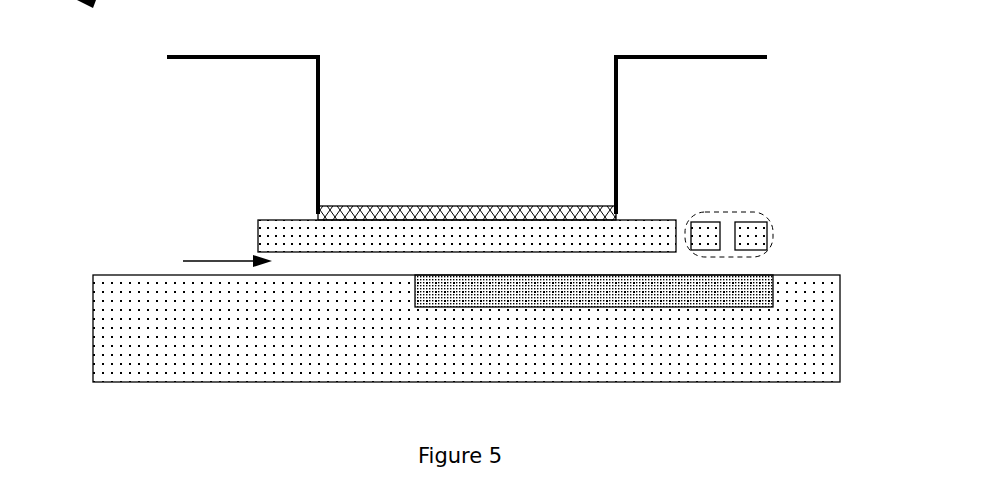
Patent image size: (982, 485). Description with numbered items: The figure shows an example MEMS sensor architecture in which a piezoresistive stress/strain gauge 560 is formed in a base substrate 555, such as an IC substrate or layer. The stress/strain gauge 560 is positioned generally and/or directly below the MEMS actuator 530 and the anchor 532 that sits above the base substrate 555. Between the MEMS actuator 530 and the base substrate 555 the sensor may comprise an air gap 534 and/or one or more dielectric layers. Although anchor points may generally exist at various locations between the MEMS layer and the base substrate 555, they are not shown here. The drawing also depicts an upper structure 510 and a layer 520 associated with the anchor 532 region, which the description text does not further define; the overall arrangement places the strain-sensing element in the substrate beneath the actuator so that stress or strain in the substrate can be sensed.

The chamber / housing 510 is at (467, 135).
The adhesive layer 520 is at (617, 213).
The MEMS actuator 530 is at (750, 212).
The anchor 532 is at (258, 232).
The air gap 534 is at (207, 260).
The base substrate 555 is at (840, 337).
The stress/strain gauge 560 is at (482, 307).